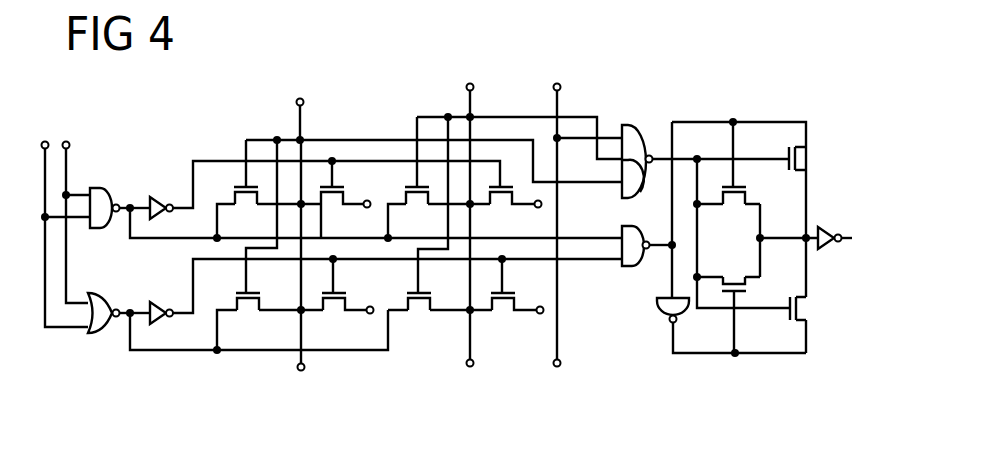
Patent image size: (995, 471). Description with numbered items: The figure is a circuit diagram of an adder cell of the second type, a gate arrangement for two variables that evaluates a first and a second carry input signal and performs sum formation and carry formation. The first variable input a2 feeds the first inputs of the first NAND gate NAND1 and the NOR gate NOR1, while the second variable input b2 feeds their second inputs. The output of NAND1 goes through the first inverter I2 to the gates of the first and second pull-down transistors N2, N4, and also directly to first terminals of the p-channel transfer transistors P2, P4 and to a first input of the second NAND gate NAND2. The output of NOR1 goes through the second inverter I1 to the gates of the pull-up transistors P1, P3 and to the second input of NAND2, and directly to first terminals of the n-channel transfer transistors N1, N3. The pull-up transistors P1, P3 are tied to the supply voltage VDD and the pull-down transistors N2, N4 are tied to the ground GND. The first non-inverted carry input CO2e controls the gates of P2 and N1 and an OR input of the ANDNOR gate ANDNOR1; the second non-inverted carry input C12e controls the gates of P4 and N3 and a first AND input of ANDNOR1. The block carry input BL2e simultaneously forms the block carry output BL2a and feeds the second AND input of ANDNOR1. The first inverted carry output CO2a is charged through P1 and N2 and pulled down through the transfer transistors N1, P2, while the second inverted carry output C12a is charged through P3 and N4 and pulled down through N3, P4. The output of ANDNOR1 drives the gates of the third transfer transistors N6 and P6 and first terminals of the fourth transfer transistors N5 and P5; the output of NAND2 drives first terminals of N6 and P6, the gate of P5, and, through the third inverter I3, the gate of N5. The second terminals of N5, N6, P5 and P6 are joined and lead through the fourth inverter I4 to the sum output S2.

The first variable input a2 is at (58, 213).
The second variable input b2 is at (78, 101).
The first NAND gate NAND1 is at (102, 228).
The NOR gate NOR1 is at (108, 335).
The second inverter I1 is at (161, 293).
The first inverter I2 is at (160, 186).
The first pull-up transistor P1 is at (344, 321).
The first p-channel transfer transistor P2 is at (269, 213).
The second pull-up transistor P3 is at (514, 321).
The second p-channel transfer transistor P4 is at (439, 214).
The fourth p-channel transfer transistor P5 is at (728, 267).
The third p-channel transfer transistor P6 is at (814, 317).
The first n-channel transfer transistor N1 is at (270, 321).
The first pull-down transistor N2 is at (342, 213).
The second n-channel transfer transistor N3 is at (440, 321).
The second pull-down transistor N4 is at (512, 214).
The fourth n-channel transfer transistor N5 is at (728, 214).
The third n-channel transfer transistor N6 is at (811, 159).
The first non-inverted carry input CO2e is at (434, 208).
The first inverted carry output CO2a is at (322, 378).
The second non-inverted carry input C12e is at (519, 200).
The second inverted carry output C12a is at (492, 377).
The block carry input BL2e is at (572, 200).
The block carry output BL2a is at (555, 393).
The ground GND is at (563, 207).
The supply voltage VDD is at (450, 289).
The ANDNOR gate ANDNOR1 is at (630, 125).
The second NAND gate NAND2 is at (626, 267).
The third inverter I3 is at (657, 312).
The fourth inverter I4 is at (828, 219).
The sum output S2 is at (847, 243).